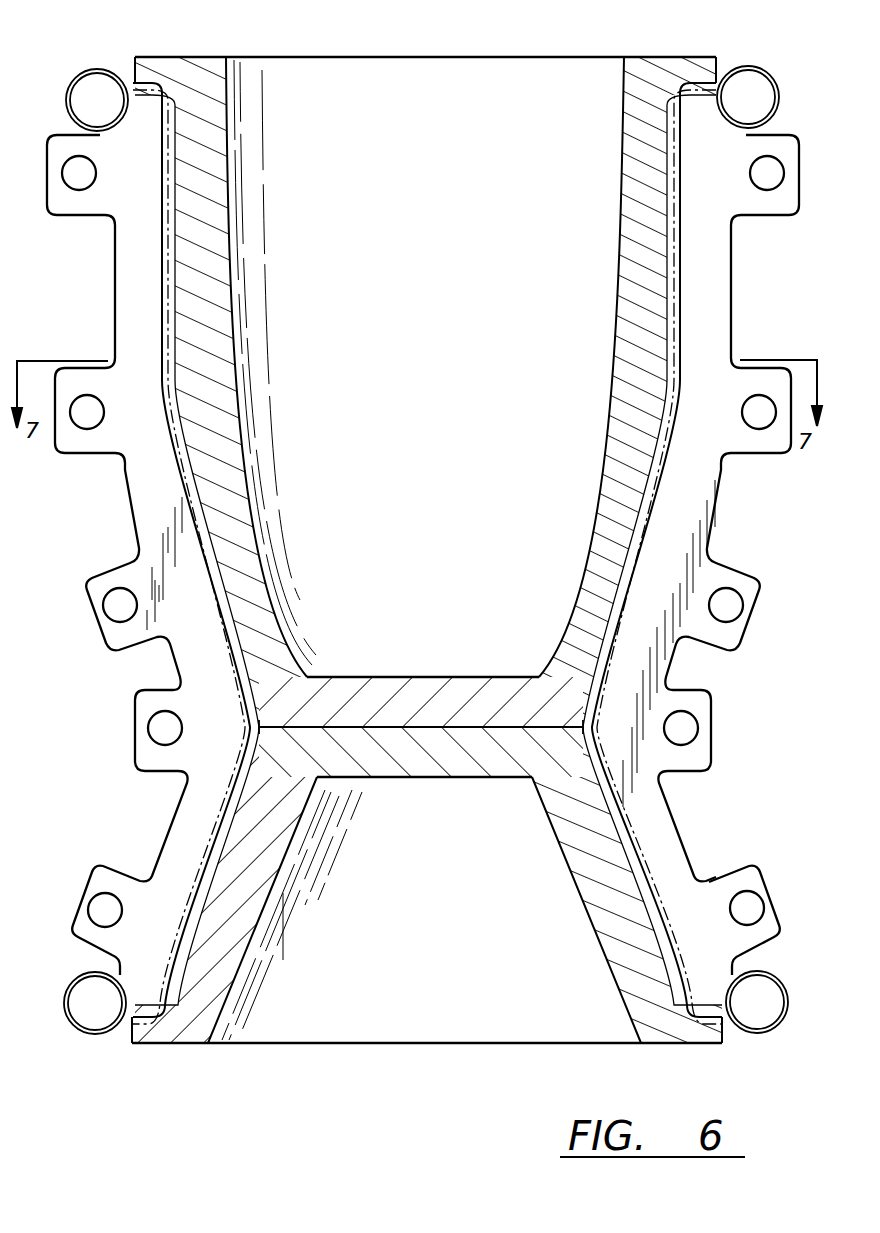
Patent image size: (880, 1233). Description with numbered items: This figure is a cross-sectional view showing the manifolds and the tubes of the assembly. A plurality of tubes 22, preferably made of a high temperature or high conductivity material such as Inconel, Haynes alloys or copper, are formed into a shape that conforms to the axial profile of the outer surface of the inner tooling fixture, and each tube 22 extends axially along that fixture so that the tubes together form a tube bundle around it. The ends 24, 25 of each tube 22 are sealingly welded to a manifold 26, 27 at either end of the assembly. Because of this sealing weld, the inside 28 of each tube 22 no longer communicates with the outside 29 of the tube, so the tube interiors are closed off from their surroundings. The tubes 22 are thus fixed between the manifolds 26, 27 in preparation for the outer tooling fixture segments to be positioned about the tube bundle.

The tube 22 is at (180, 474).
The end of tube 24 is at (129, 72).
The end of tube 25 is at (108, 1035).
The manifold 26 is at (67, 101).
The manifold 27 is at (63, 1013).
The inside of tube 28 is at (176, 328).
The outside of tube 29 is at (166, 275).